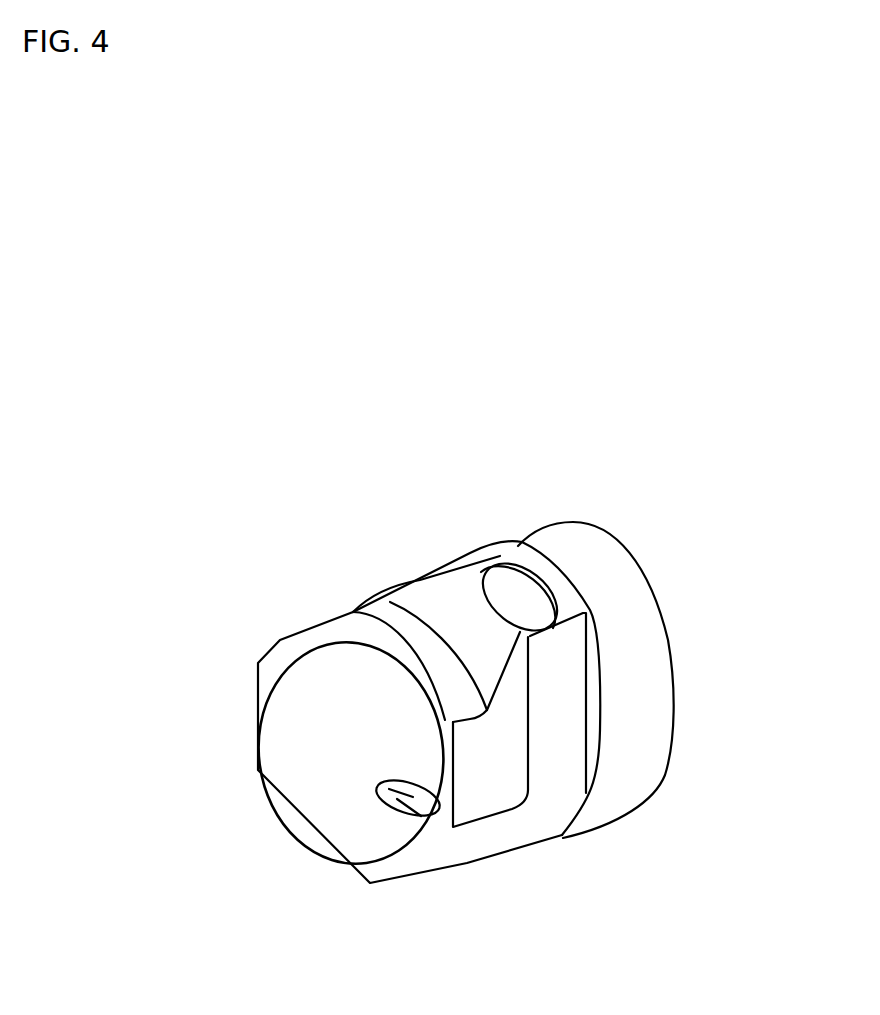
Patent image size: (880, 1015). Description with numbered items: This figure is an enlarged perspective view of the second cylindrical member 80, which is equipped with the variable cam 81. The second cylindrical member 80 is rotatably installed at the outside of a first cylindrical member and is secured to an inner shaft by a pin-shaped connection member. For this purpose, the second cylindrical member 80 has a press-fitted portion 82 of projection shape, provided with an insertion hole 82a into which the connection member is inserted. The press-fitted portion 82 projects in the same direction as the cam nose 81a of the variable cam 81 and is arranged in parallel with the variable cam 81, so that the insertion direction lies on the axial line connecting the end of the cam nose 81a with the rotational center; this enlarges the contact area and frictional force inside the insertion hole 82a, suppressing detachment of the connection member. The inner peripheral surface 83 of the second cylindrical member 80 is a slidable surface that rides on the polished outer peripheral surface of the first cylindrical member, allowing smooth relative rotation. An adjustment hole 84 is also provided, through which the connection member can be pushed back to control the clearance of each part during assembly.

The second cylindrical member 80 is at (740, 890).
The variable cam 81 is at (642, 683).
The cam nose 81a is at (603, 552).
The press-fitted portion 82 is at (453, 607).
The insertion hole 82a is at (522, 570).
The inner peripheral surface 83 is at (283, 688).
The adjustment hole 84 is at (380, 781).